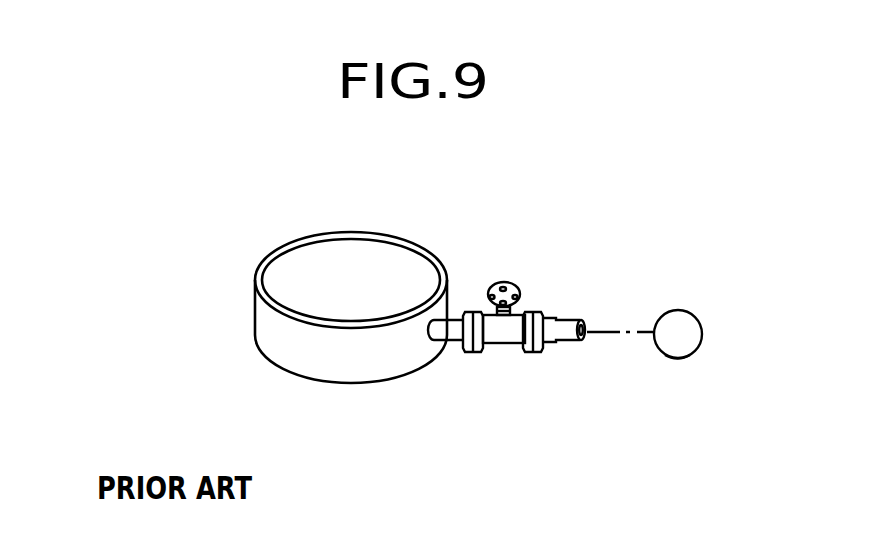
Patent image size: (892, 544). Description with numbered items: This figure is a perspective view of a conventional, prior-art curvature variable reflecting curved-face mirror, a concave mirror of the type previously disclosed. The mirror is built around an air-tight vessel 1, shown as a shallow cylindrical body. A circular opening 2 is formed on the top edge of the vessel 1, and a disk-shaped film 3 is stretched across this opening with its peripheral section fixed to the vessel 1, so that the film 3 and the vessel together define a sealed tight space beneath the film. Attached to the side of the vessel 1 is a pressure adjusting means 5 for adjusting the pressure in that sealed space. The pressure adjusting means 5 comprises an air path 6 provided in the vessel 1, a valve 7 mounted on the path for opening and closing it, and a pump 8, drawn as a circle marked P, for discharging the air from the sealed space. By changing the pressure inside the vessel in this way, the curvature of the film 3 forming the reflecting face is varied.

The air-tight vessel 1 is at (262, 337).
The circular opening 2 is at (402, 262).
The disk-shaped film 3 is at (308, 277).
The pressure adjusting means 5 is at (650, 317).
The air path 6 is at (453, 332).
The valve 7 is at (515, 285).
The pump 8 is at (685, 348).